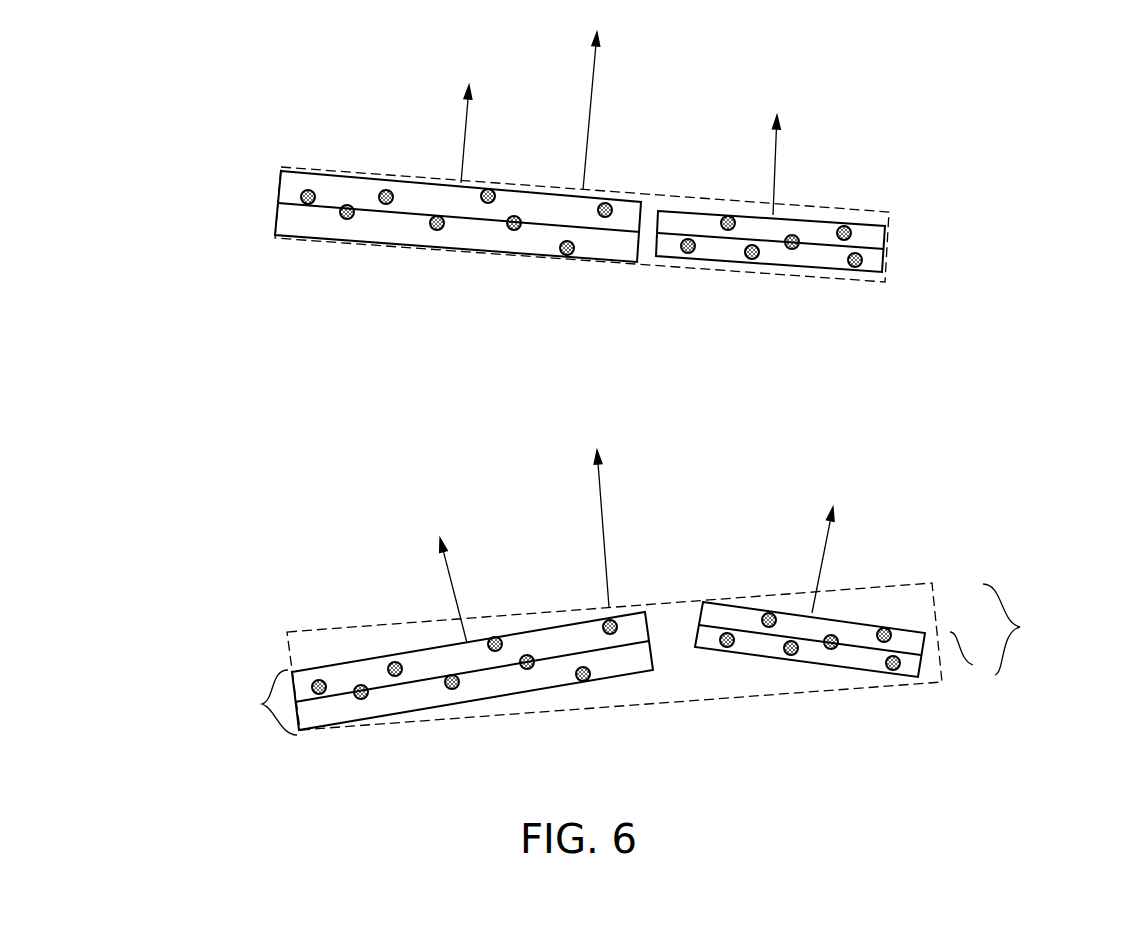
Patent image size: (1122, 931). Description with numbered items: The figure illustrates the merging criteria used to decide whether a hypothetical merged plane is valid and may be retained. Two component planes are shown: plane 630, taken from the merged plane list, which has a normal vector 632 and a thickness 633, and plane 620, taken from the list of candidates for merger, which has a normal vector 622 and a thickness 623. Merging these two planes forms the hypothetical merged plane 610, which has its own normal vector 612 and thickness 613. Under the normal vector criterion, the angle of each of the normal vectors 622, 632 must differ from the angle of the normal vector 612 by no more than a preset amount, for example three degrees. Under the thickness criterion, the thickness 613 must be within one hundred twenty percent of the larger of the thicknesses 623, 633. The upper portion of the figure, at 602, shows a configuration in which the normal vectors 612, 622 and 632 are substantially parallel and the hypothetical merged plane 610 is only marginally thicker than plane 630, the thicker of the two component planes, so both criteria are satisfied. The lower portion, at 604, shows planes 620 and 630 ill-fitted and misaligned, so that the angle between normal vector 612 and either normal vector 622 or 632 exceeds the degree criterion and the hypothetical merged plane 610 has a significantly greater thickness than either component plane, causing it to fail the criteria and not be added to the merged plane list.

The configuration satisfying the merging criteria 602 is at (173, 87).
The configuration failing the merging criteria 604 is at (173, 574).
The hypothetical merged plane 610 is at (643, 263).
The normal vector of hypothetical merged plane 612 is at (592, 107).
The thickness of hypothetical merged plane 613 is at (1020, 627).
The plane from list of candidates for merger 620 is at (787, 265).
The normal vector of plane 620 622 is at (775, 158).
The thickness of plane 620 623 is at (973, 665).
The plane from merged plane list 630 is at (435, 250).
The normal vector of plane 630 632 is at (466, 121).
The thickness of plane 630 633 is at (262, 704).